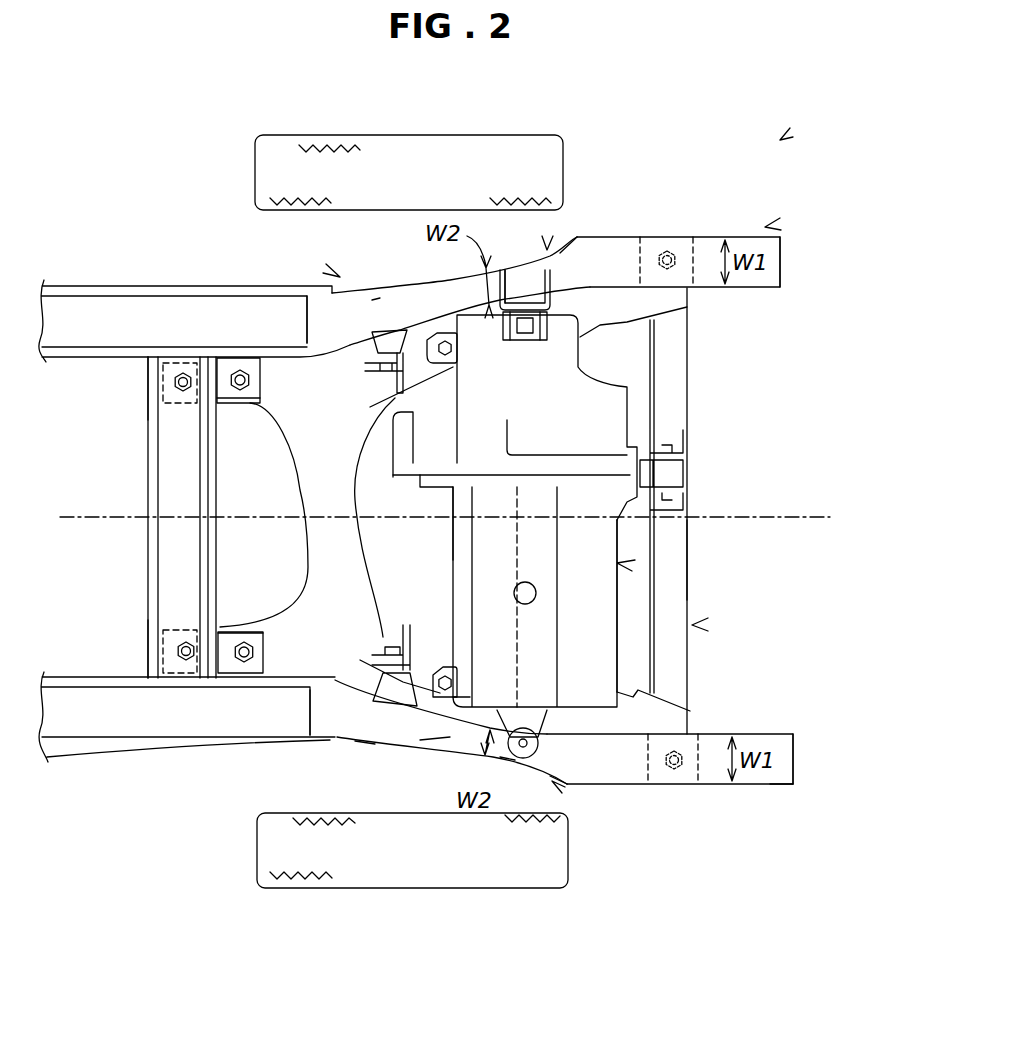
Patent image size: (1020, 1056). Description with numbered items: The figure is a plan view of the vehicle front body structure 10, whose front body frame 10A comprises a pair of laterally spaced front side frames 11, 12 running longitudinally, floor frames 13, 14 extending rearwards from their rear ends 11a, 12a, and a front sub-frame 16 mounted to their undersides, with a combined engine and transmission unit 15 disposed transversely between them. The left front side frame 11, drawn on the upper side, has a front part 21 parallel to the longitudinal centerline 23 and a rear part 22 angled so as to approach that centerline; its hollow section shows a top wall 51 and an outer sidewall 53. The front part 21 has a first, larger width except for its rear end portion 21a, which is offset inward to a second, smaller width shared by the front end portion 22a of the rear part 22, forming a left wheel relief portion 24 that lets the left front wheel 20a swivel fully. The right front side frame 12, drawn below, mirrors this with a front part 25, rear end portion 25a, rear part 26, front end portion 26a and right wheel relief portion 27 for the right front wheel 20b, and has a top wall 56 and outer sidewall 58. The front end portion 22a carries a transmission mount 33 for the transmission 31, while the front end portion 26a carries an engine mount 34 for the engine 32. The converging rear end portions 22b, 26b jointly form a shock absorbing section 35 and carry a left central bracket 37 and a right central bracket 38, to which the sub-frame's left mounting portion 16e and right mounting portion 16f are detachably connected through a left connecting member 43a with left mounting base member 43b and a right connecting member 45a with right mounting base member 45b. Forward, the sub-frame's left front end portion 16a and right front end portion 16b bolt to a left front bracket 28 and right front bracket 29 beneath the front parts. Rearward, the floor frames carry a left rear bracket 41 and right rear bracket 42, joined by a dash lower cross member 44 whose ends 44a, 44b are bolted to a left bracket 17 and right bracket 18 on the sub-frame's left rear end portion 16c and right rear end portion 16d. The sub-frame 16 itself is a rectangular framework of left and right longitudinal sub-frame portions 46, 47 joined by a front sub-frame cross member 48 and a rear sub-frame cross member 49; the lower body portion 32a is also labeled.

The vehicle front body structure 10 is at (780, 140).
The front body frame 10A is at (765, 227).
The left front side frame 11 is at (393, 158).
The rear end of left front side frame 11a is at (307, 313).
The right front side frame 12 is at (398, 862).
The rear end of right front side frame 12a is at (320, 710).
The left floor frame 13 is at (110, 290).
The right floor frame 14 is at (107, 743).
The combined engine and transmission unit 15 is at (617, 563).
The front sub-frame 16 is at (692, 625).
The left front end portion 16a is at (667, 297).
The right front end portion 16b is at (684, 722).
The left rear end portion 16c is at (230, 403).
The right rear end portion 16d is at (230, 633).
The left mounting portion 16e is at (390, 400).
The right mounting portion 16f is at (398, 640).
The left bracket 17 is at (183, 401).
The right bracket 18 is at (187, 628).
The left front wheel 20a is at (258, 165).
The right front wheel 20b is at (260, 850).
The front part of left front side frame 21 is at (623, 243).
The rear end portion of front part 21a is at (560, 253).
The rear part of left front side frame 22 is at (397, 290).
The front end portion of rear part 22a is at (518, 277).
The rear end portion of rear part 22b is at (372, 300).
The longitudinal centerline 23 is at (107, 518).
The left wheel relief portion 24 is at (547, 250).
The front part of right front side frame 25 is at (660, 784).
The rear end portion of front part 25a is at (552, 781).
The rear part of right front side frame 26 is at (433, 740).
The front end portion of rear part 26a is at (507, 757).
The rear end portion of rear part 26b is at (363, 740).
The right wheel relief portion 27 is at (558, 784).
The left front bracket 28 is at (717, 237).
The right front bracket 29 is at (700, 765).
The transmission 31 is at (620, 403).
The engine 32 is at (610, 665).
The lower body portion 32a is at (437, 697).
The transmission mount 33 is at (530, 340).
The engine mount 34 is at (547, 753).
The shock absorbing section 35 is at (340, 277).
The left central bracket 37 is at (390, 333).
The right central bracket 38 is at (383, 690).
The left rear bracket 41 is at (223, 363).
The right rear bracket 42 is at (233, 670).
The left connecting member 43a is at (425, 352).
The left mounting base member 43b is at (402, 425).
The dash lower cross member 44 is at (150, 567).
The left end of dash lower cross member 44a is at (150, 372).
The right end of dash lower cross member 44b is at (150, 657).
The right connecting member 45a is at (437, 672).
The right mounting base member 45b is at (403, 627).
The left longitudinal sub-frame portion 46 is at (392, 418).
The right longitudinal sub-frame portion 47 is at (423, 637).
The front sub-frame cross member 48 is at (684, 547).
The rear sub-frame cross member 49 is at (297, 493).
The top wall 51 is at (783, 262).
The outer sidewall 53 is at (694, 247).
The top wall 56 is at (790, 763).
The outer sidewall 58 is at (780, 786).